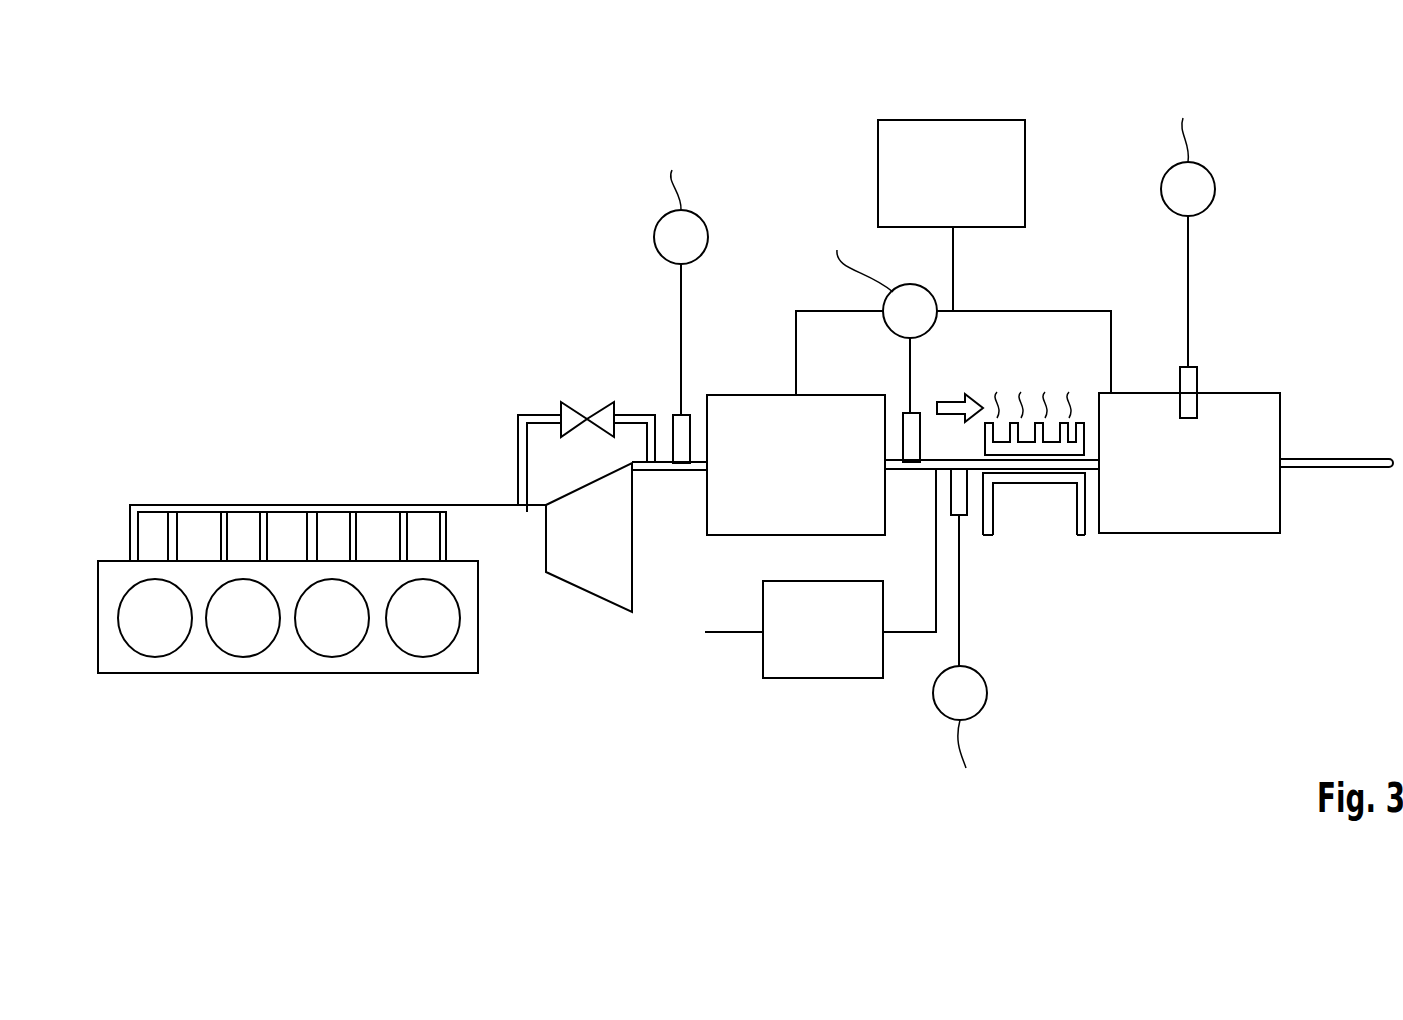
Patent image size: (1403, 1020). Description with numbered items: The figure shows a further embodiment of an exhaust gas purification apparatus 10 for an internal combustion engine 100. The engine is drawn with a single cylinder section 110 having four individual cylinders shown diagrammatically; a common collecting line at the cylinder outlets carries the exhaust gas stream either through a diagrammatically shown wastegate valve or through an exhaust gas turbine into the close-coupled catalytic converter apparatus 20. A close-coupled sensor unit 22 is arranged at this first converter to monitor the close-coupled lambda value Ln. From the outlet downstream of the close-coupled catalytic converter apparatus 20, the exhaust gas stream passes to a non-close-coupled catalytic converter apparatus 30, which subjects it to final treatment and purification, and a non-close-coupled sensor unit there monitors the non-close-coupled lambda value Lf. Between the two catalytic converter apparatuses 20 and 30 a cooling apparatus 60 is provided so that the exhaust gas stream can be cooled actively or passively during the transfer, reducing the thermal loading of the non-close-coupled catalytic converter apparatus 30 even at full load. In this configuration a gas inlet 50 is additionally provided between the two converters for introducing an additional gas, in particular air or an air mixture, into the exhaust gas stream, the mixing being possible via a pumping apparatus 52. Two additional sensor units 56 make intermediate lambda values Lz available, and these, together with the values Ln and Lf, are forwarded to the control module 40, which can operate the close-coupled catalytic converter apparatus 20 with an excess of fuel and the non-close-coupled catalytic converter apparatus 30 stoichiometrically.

The exhaust gas purification apparatus 10 is at (1308, 137).
The close-coupled catalytic converter apparatus 20 is at (752, 393).
The close-coupled sensor unit 22 is at (675, 412).
The non-close-coupled catalytic converter apparatus 30 is at (1183, 533).
The control module 40 is at (950, 120).
The gas inlet 50 is at (935, 472).
The pumping apparatus 52 is at (822, 678).
The additional sensor units 56 is at (915, 413).
The cooling apparatus 60 is at (1034, 483).
The internal combustion engine 100 is at (370, 242).
The cylinder section 110 is at (296, 676).